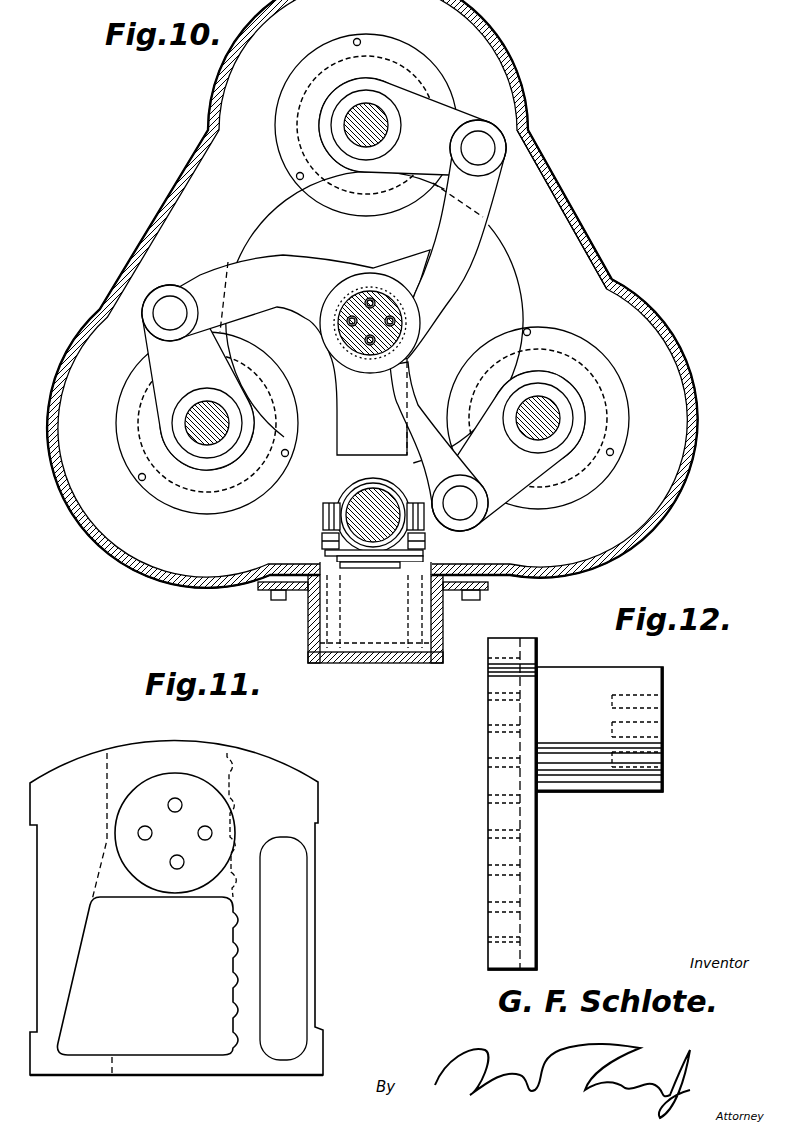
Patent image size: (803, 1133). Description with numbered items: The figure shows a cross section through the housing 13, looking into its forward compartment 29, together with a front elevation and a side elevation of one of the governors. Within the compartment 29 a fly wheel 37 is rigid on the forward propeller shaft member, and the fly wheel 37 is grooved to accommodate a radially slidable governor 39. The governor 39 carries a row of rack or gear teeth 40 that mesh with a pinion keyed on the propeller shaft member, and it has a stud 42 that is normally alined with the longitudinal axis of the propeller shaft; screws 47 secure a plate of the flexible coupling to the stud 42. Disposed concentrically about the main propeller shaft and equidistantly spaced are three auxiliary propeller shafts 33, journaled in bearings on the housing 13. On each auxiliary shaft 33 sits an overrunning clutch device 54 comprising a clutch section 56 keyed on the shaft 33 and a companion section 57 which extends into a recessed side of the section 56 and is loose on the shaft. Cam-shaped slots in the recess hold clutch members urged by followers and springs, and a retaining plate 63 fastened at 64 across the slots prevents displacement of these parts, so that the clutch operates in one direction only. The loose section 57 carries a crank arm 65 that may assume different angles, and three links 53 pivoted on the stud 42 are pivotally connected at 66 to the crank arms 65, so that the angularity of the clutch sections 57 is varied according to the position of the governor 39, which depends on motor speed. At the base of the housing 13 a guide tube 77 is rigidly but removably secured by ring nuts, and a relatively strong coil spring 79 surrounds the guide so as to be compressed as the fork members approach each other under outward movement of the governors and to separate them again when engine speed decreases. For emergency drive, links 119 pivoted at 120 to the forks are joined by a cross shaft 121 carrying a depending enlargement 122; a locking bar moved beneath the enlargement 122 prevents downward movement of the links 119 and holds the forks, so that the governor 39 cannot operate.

In FIG. 10, the housing 13 is at (198, 170).
In FIG. 10, the forward compartment 29 is at (548, 232).
In FIG. 10, the auxiliary propeller shafts 33 is at (390, 128).
In FIG. 10, the fly wheel 37 is at (374, 317).
In FIG. 11, the governor 39 is at (266, 775).
In FIG. 12, the governor 39 is at (487, 850).
In FIG. 11, the rack or gear teeth 40 is at (229, 977).
In FIG. 12, the rack or gear teeth 40 is at (500, 788).
In FIG. 10, the stud 42 is at (401, 338).
In FIG. 11, the stud 42 is at (193, 782).
In FIG. 12, the stud 42 is at (655, 689).
In FIG. 10, the screws 47 is at (392, 319).
In FIG. 10, the links 53 is at (491, 214).
In FIG. 10, the overrunning clutch device 54 is at (432, 56).
In FIG. 10, the clutch section 56 is at (341, 43).
In FIG. 10, the companion clutch section 57 is at (409, 53).
In FIG. 10, the retaining plate 63 is at (440, 94).
In FIG. 10, the fastening screws 64 is at (360, 40).
In FIG. 10, the crank arms 65 is at (457, 121).
In FIG. 10, the pivotal connection 66 is at (489, 152).
In FIG. 10, the guide tube 77 is at (354, 491).
In FIG. 10, the coil spring 79 is at (372, 479).
In FIG. 10, the links 119 is at (330, 534).
In FIG. 10, the pivot 120 is at (333, 510).
In FIG. 10, the cross shaft 121 is at (330, 543).
In FIG. 10, the depending enlargement 122 is at (377, 570).